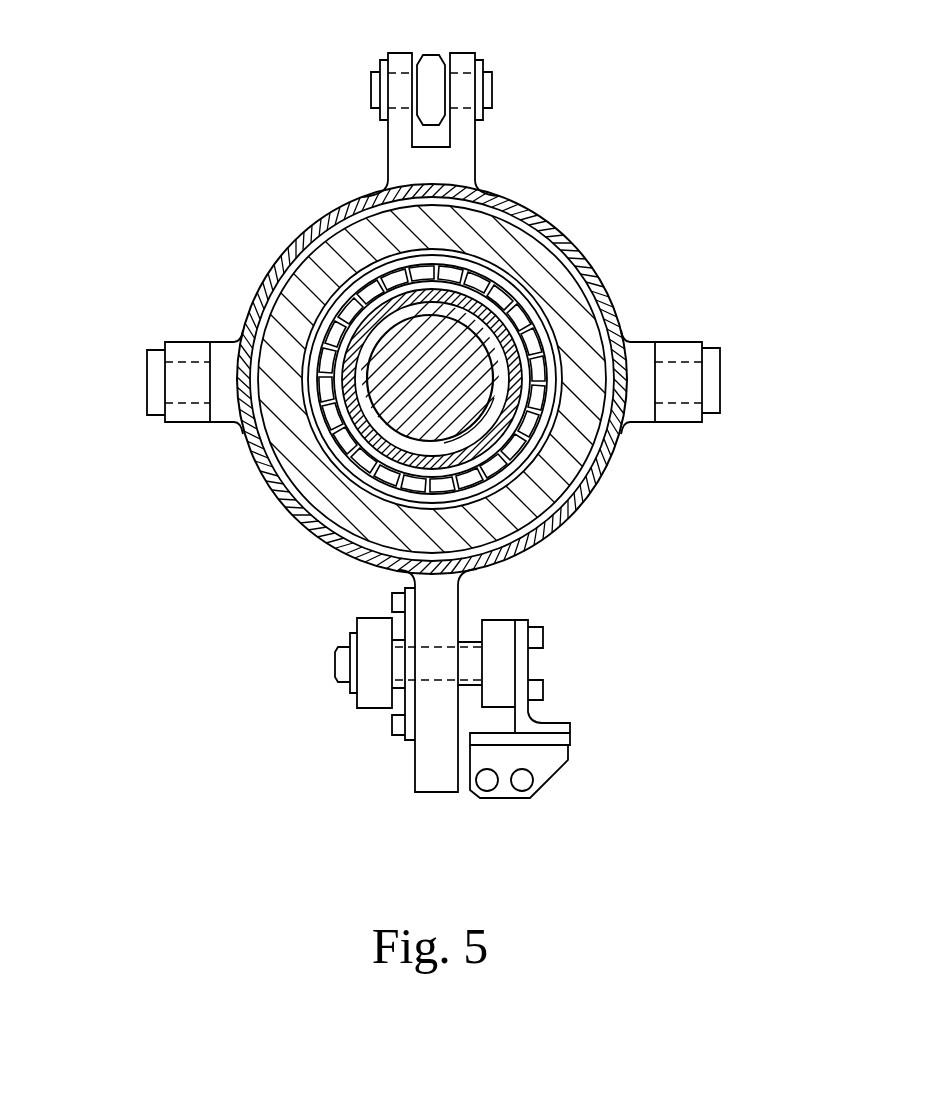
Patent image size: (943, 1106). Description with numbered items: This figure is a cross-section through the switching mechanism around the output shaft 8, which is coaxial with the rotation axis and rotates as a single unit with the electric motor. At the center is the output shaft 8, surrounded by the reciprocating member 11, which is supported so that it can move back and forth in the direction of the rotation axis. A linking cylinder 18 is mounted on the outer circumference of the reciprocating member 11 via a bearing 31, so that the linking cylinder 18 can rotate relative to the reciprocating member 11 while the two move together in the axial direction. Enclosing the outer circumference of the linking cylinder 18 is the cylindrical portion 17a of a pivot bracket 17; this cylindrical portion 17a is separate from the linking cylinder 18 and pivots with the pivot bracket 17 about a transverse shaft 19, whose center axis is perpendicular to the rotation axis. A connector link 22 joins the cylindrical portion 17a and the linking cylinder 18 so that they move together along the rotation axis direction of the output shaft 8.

The output shaft 8 is at (481, 418).
The reciprocating member 11 is at (340, 442).
The pivot bracket 17 is at (413, 157).
The cylindrical portion 17a is at (305, 524).
The linking cylinder 18 is at (550, 284).
The transverse shaft 19 is at (336, 668).
The connector link 22 is at (173, 345).
The bearing 31 is at (500, 276).